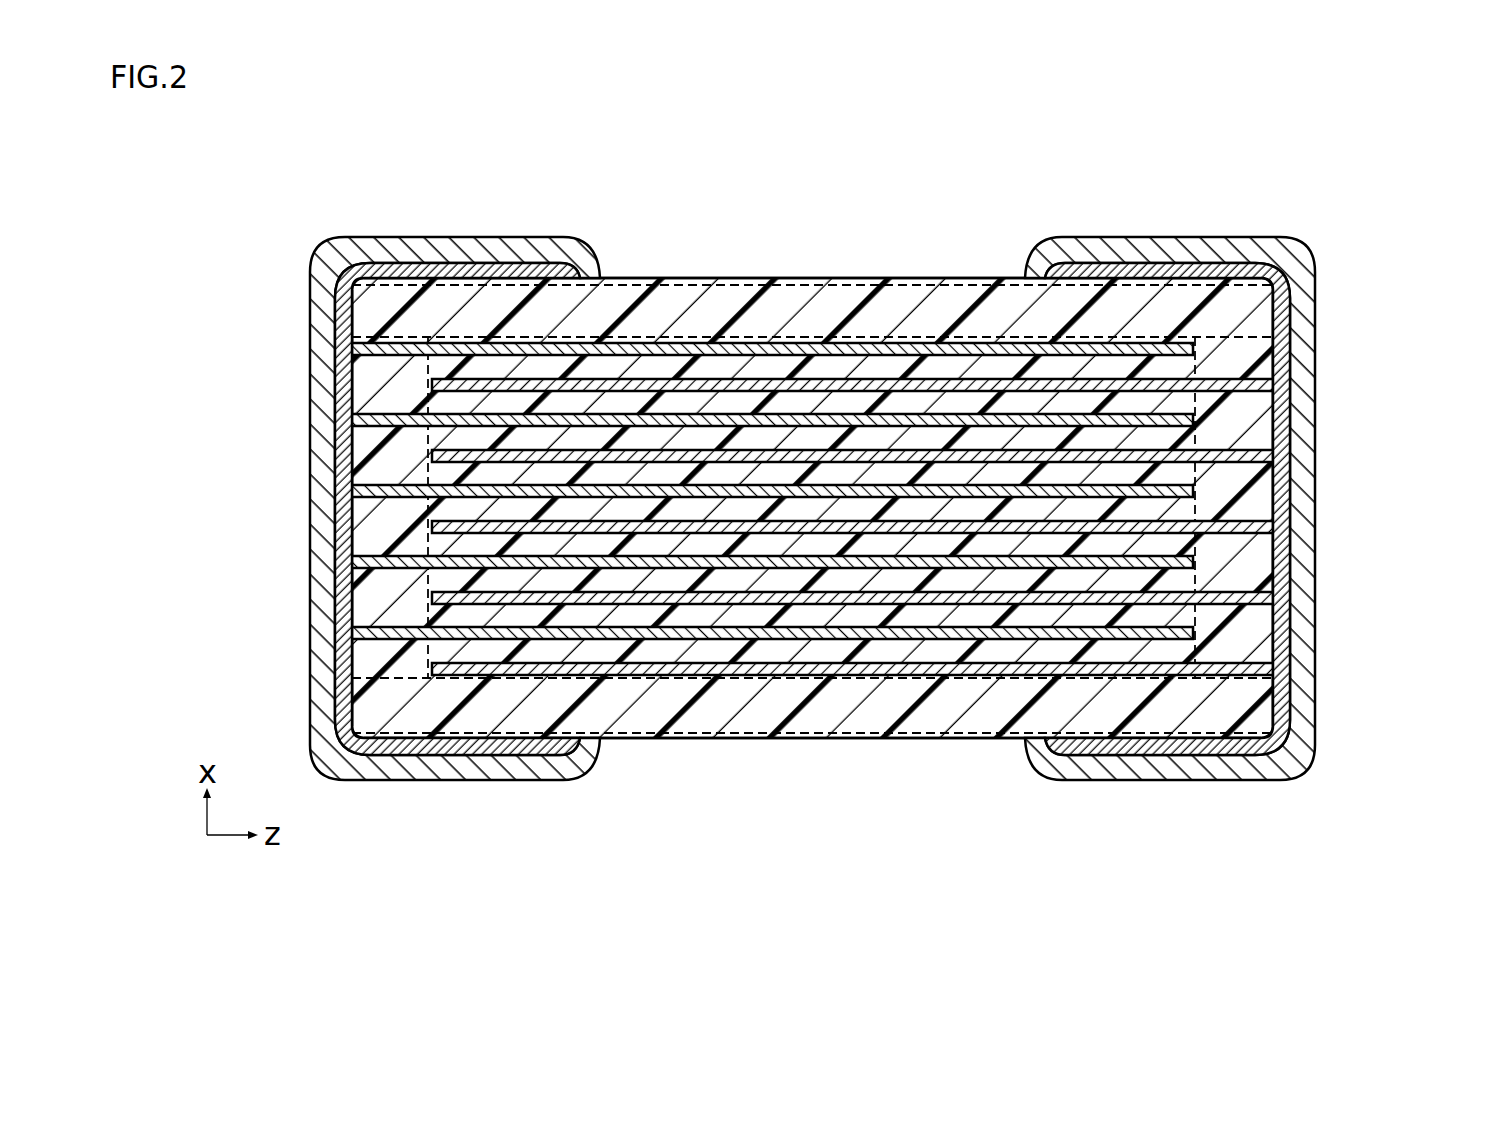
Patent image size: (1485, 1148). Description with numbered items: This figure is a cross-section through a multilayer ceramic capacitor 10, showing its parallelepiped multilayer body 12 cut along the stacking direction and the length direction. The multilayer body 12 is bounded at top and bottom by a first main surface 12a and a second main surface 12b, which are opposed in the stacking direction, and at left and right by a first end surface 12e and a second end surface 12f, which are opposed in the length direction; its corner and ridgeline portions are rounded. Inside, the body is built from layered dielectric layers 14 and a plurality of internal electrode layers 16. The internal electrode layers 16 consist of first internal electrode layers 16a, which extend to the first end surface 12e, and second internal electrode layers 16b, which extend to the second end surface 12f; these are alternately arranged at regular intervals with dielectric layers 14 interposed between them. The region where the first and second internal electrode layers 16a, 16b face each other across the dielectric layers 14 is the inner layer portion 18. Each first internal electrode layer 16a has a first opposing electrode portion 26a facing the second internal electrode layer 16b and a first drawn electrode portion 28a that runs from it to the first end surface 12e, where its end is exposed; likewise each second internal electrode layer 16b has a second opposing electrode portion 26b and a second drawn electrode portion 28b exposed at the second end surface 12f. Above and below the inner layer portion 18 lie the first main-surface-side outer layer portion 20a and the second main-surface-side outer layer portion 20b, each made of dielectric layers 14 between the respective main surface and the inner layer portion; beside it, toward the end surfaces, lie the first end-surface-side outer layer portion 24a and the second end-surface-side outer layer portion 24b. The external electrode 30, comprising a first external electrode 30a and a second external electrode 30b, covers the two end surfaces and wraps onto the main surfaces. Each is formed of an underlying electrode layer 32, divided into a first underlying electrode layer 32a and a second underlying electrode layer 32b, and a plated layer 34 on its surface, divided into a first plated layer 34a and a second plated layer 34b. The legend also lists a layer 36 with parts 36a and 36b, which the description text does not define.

The multilayer ceramic capacitor 10 is at (328, 176).
The multilayer body 12 is at (811, 500).
The first main surface 12a is at (958, 278).
The second main surface 12b is at (705, 740).
The first end surface 12e is at (352, 485).
The second end surface 12f is at (1275, 483).
The dielectric layer 14 is at (873, 437).
The internal electrode layers 16 is at (622, 858).
The first internal electrode layer 16a is at (706, 513).
The second internal electrode layer 16b is at (916, 513).
The inner layer portion 18 is at (445, 650).
The first main-surface-side outer layer portion 20a is at (985, 292).
The second main-surface-side outer layer portion 20b is at (990, 722).
The first end-surface-side outer layer portion 24a is at (375, 515).
The second end-surface-side outer layer portion 24b is at (1258, 505).
The first opposing electrode portion 26a is at (760, 492).
The second opposing electrode portion 26b is at (818, 455).
The first drawn electrode portion 28a is at (377, 352).
The second drawn electrode portion 28b is at (1252, 392).
The external electrode 30 is at (746, 858).
The first external electrode 30a is at (382, 508).
The second external electrode 30b is at (1242, 508).
The underlying electrode layer 32 is at (866, 858).
The first underlying electrode layer 32a is at (322, 312).
The second underlying electrode layer 32b is at (1305, 300).
The plated layer 34 is at (989, 858).
The first plated layer 34a is at (342, 345).
The second plated layer 34b is at (1283, 340).
The plating layers 36 is at (1109, 858).
The first plating layer 36a is at (1133, 883).
The second plating layer 36b is at (1133, 917).